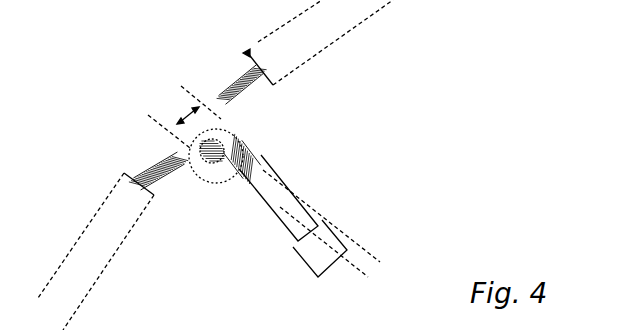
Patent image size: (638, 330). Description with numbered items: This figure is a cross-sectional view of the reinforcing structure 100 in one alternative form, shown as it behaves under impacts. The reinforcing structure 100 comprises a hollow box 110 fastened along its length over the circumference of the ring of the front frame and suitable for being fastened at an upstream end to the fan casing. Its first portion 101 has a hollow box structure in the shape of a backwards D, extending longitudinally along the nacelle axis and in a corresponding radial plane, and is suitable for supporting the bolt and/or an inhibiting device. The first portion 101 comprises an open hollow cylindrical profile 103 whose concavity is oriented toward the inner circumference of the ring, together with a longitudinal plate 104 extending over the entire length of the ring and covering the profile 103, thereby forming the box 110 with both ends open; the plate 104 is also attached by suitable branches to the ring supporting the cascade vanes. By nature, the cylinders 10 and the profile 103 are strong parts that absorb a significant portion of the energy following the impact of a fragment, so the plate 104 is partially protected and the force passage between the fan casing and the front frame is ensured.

The reinforcing structure 100 is at (191, 80).
The longitudinal plate 104 is at (223, 101).
The cylinder 10 is at (236, 137).
The first portion 101 is at (190, 173).
The open hollow cylindrical profile 103 is at (183, 158).
The hollow box 110 is at (202, 185).